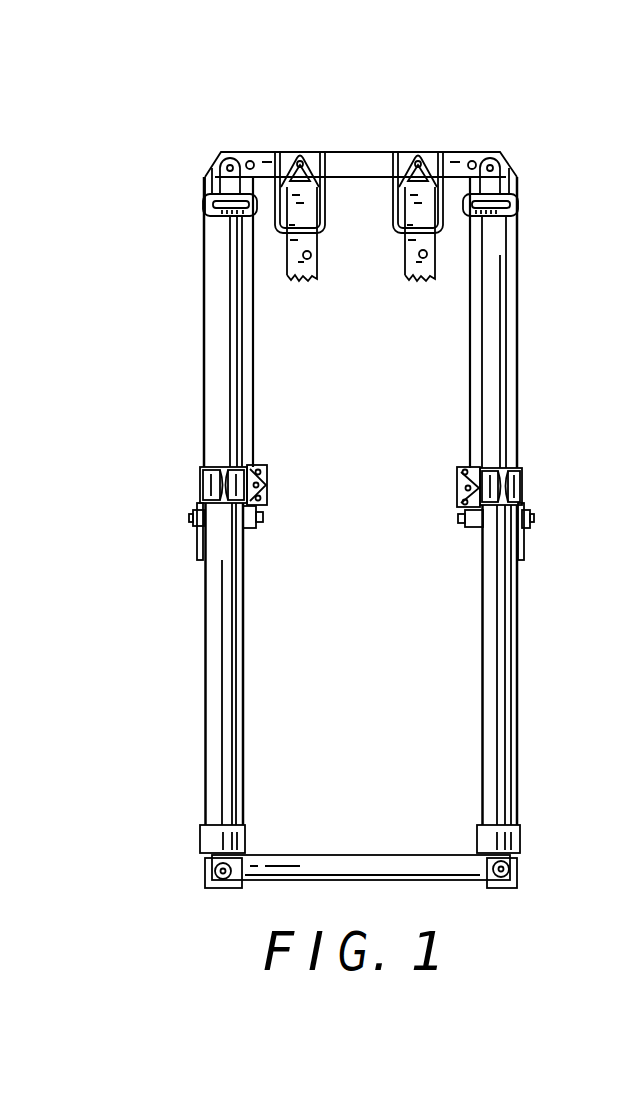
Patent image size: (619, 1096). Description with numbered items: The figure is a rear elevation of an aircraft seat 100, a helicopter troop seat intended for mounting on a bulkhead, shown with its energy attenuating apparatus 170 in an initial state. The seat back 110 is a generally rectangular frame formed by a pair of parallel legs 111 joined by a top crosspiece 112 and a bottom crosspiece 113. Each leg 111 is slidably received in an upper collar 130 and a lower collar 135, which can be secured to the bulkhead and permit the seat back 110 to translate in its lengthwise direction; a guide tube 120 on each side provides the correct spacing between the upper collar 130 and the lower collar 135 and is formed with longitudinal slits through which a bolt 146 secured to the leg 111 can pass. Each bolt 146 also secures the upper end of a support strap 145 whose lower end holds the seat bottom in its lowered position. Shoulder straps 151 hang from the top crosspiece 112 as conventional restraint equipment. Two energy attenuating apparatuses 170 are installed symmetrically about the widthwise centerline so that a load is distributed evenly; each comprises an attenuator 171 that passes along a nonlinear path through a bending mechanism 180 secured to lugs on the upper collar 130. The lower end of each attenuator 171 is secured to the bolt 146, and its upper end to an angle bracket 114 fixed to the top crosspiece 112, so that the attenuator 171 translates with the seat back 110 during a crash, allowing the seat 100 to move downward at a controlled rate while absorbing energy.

The aircraft seat 100 is at (182, 657).
The seat back 110 is at (205, 393).
The legs 111 is at (204, 358).
The top crosspiece 112 is at (378, 152).
The bottom crosspiece 113 is at (470, 882).
The angle bracket 114 is at (478, 152).
The guide tube 120 is at (205, 755).
The upper collar 130 is at (200, 476).
The lower collar 135 is at (200, 845).
The strap 145 is at (198, 548).
The bolt 146 is at (193, 518).
The shoulder straps 151 is at (287, 258).
The energy attenuating apparatus 170 is at (278, 452).
The attenuator 171 is at (252, 295).
The bending mechanism 180 is at (267, 497).